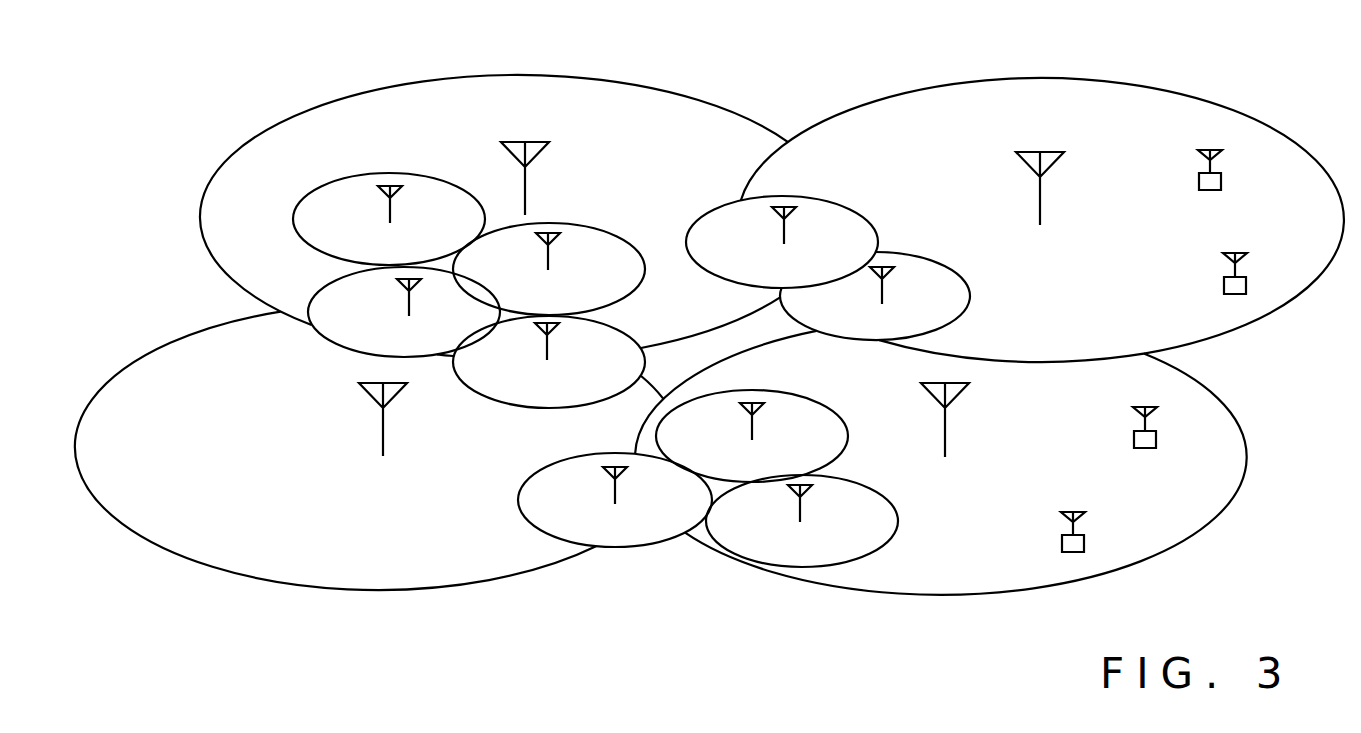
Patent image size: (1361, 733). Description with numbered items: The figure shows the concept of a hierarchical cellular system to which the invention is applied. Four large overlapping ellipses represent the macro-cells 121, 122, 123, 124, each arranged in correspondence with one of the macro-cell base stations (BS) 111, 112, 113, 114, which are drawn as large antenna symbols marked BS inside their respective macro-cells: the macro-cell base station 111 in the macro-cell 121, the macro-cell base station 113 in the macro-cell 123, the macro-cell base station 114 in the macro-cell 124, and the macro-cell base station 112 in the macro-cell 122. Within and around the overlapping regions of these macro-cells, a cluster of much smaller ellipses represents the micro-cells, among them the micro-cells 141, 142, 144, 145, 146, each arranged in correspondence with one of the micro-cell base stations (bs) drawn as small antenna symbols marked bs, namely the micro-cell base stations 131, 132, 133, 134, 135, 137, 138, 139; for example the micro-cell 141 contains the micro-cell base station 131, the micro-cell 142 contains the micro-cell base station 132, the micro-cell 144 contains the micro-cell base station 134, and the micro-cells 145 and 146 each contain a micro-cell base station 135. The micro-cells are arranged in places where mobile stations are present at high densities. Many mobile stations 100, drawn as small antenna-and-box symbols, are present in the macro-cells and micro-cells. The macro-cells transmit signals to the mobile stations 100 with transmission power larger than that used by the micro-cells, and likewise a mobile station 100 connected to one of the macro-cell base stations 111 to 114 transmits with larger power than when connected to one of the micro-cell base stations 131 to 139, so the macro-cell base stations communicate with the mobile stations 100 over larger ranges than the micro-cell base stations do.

The mobile station 100 is at (1221, 182).
The macro-cell base station 111 is at (383, 433).
The macro-cell base station 112 is at (945, 433).
The macro-cell base station 113 is at (525, 198).
The macro-cell base station 114 is at (1040, 206).
The macro-cell 121 is at (182, 340).
The macro-cell 122 is at (1225, 398).
The macro-cell 123 is at (606, 78).
The macro-cell 124 is at (1191, 92).
The micro-cell base station 131 is at (390, 213).
The micro-cell base station 132 is at (409, 306).
The micro-cell base station 133 is at (548, 260).
The micro-cell base station 134 is at (547, 350).
The micro-cell base station 135 is at (784, 234).
The micro-cell base station 137 is at (752, 430).
The micro-cell base station 138 is at (615, 494).
The micro-cell base station 139 is at (800, 512).
The micro-cell 141 is at (343, 178).
The micro-cell 142 is at (327, 286).
The micro-cell 144 is at (624, 328).
The micro-cell 145 is at (787, 194).
The micro-cell 146 is at (970, 294).